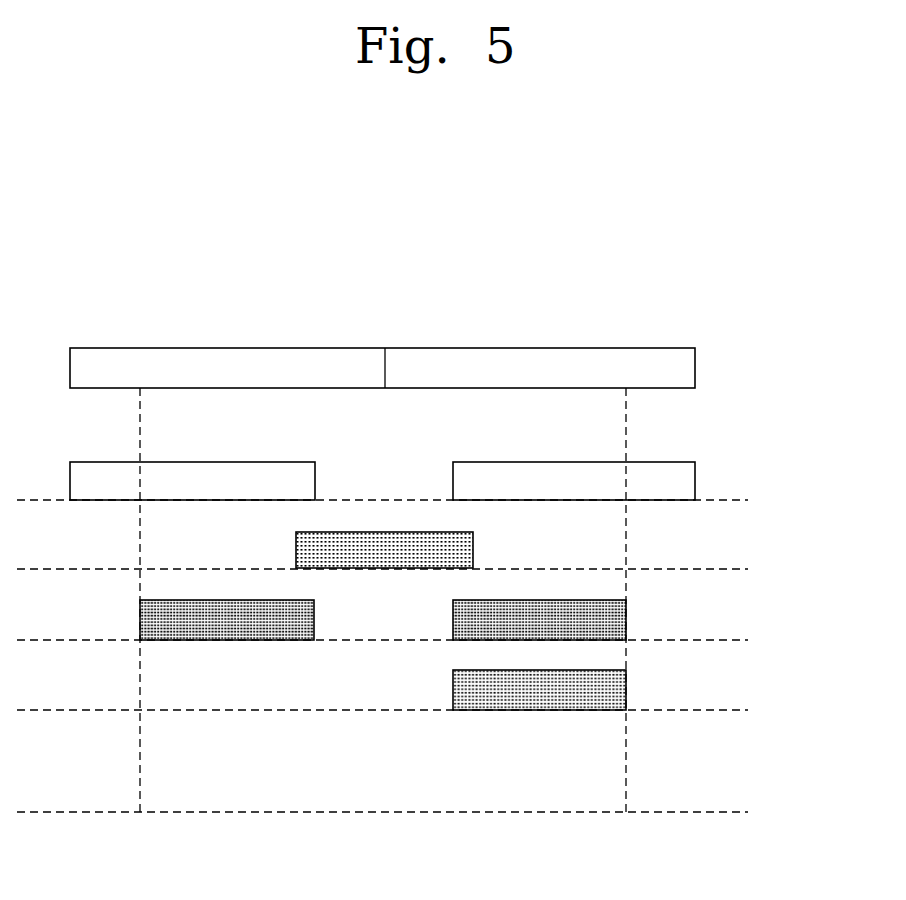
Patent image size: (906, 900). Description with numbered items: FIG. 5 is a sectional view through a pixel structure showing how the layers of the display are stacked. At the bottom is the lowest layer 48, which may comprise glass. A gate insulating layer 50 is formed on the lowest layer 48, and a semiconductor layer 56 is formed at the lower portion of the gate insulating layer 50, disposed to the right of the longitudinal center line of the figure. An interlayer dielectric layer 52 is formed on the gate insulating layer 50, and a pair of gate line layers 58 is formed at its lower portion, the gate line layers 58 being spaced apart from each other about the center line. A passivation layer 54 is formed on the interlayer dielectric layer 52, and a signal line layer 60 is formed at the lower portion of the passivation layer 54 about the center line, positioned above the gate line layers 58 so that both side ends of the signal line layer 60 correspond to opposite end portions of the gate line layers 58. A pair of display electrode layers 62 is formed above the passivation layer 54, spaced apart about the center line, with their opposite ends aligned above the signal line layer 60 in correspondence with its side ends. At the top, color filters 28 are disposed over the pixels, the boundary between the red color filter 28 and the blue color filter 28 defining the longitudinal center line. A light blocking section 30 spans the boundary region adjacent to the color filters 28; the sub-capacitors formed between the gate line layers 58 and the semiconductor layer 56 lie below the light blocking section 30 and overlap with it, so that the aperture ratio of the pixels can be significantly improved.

The color filter 28 is at (353, 371).
The light blocking section 30 is at (138, 826).
The lowest layer 48 is at (732, 767).
The gate insulating layer 50 is at (732, 677).
The interlayer dielectric layer 52 is at (732, 607).
The passivation layer 54 is at (732, 535).
The semiconductor layer 56 is at (626, 690).
The gate line layer 58 is at (208, 625).
The signal line layer 60 is at (408, 553).
The display electrode layer 62 is at (210, 485).